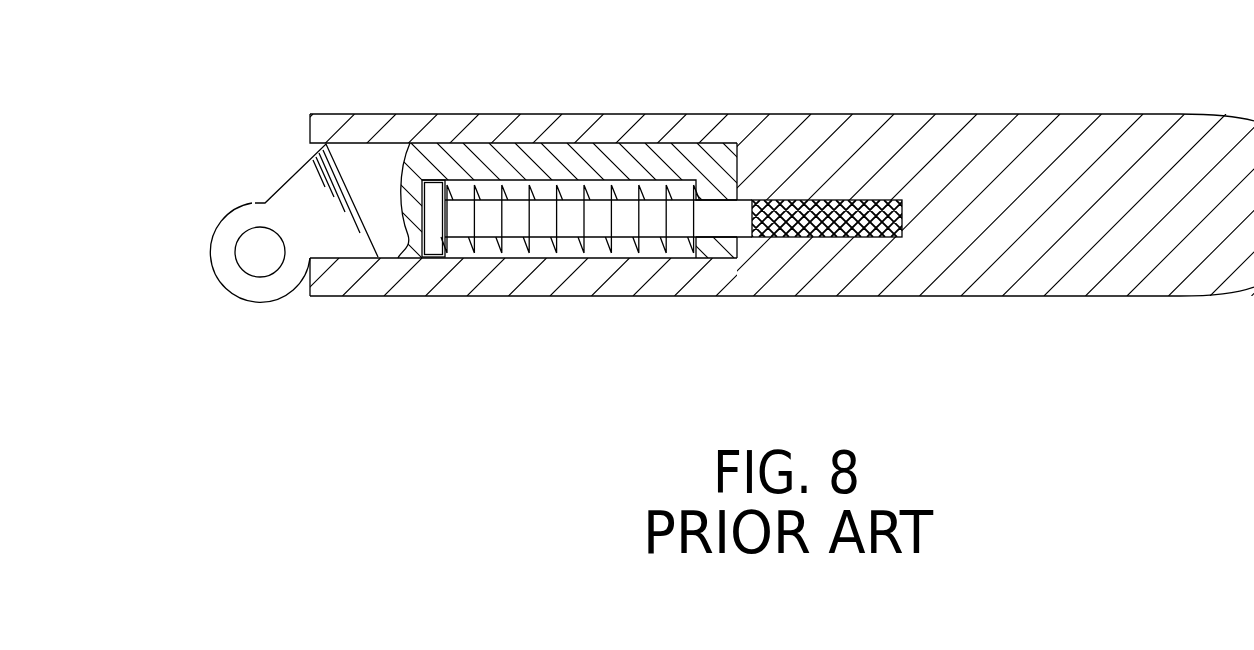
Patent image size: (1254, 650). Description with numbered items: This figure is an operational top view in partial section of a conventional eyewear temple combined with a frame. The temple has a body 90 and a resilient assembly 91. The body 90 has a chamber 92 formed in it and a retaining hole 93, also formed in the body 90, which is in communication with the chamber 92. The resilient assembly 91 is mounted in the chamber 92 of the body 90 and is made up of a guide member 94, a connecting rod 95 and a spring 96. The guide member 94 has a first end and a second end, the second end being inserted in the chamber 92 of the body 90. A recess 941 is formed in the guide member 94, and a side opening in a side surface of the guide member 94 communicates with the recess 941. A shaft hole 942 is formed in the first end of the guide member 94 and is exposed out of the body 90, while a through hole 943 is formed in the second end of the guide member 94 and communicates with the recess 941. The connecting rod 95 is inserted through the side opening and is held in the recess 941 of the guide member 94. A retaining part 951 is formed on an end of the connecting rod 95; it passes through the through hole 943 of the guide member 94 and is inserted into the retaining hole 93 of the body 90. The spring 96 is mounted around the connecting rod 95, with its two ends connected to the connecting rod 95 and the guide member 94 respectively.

The body 90 is at (1009, 140).
The resilient assembly 91 is at (268, 163).
The chamber 92 is at (563, 145).
The retaining hole 93 is at (836, 205).
The guide member 94 is at (460, 163).
The connecting rod 95 is at (540, 217).
The spring 96 is at (502, 217).
The recess 941 is at (624, 247).
The shaft hole 942 is at (248, 253).
The through hole 943 is at (716, 231).
The retaining part 951 is at (826, 223).